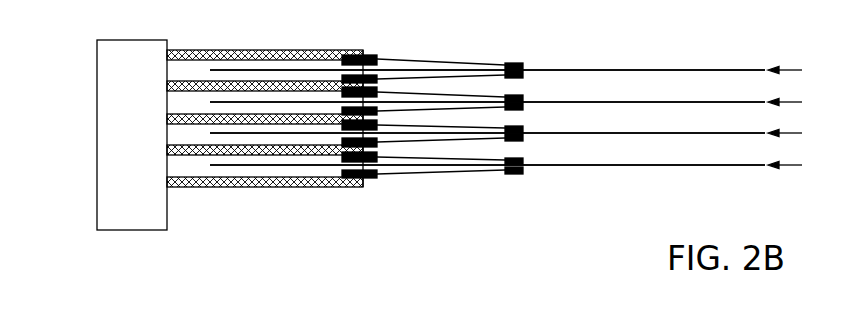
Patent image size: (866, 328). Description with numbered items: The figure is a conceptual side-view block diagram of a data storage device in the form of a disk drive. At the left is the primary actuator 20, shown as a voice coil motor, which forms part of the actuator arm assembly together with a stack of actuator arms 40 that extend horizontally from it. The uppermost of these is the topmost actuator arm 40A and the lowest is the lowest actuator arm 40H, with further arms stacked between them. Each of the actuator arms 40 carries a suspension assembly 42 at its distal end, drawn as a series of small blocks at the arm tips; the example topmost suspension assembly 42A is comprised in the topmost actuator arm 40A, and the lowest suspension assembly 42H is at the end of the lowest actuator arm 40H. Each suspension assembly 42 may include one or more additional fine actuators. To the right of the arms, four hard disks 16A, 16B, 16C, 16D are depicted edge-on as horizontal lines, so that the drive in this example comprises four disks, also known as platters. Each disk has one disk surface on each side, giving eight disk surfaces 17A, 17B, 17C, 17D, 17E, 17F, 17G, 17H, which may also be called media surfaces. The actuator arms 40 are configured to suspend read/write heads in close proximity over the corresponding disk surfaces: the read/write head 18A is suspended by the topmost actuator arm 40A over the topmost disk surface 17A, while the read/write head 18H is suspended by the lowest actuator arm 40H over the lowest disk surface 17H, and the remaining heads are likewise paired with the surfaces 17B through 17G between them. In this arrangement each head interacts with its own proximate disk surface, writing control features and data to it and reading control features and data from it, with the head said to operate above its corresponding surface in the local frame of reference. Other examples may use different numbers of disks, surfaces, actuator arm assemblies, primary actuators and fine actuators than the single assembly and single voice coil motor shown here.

The primary actuator 20 is at (97, 77).
The actuator arms 40 is at (273, 213).
The topmost actuator arm 40A is at (287, 49).
The lowest actuator arm 40H is at (233, 189).
The suspension assembly 42 is at (435, 213).
The topmost suspension assembly 42A is at (462, 50).
The lowest suspension assembly 42H is at (460, 188).
The read/write head 18A is at (531, 55).
The read/write head 18H is at (532, 181).
The topmost disk surface 17A is at (680, 70).
The disk surface 17B is at (663, 73).
The disk surface 17C is at (680, 102).
The disk surface 17D is at (663, 104).
The disk surface 17E is at (667, 133).
The disk surface 17F is at (650, 136).
The disk surface 17G is at (667, 165).
The lowest disk surface 17H is at (650, 168).
The hard disk 16A is at (801, 70).
The hard disk 16B is at (801, 102).
The hard disk 16C is at (801, 133).
The hard disk 16D is at (802, 165).